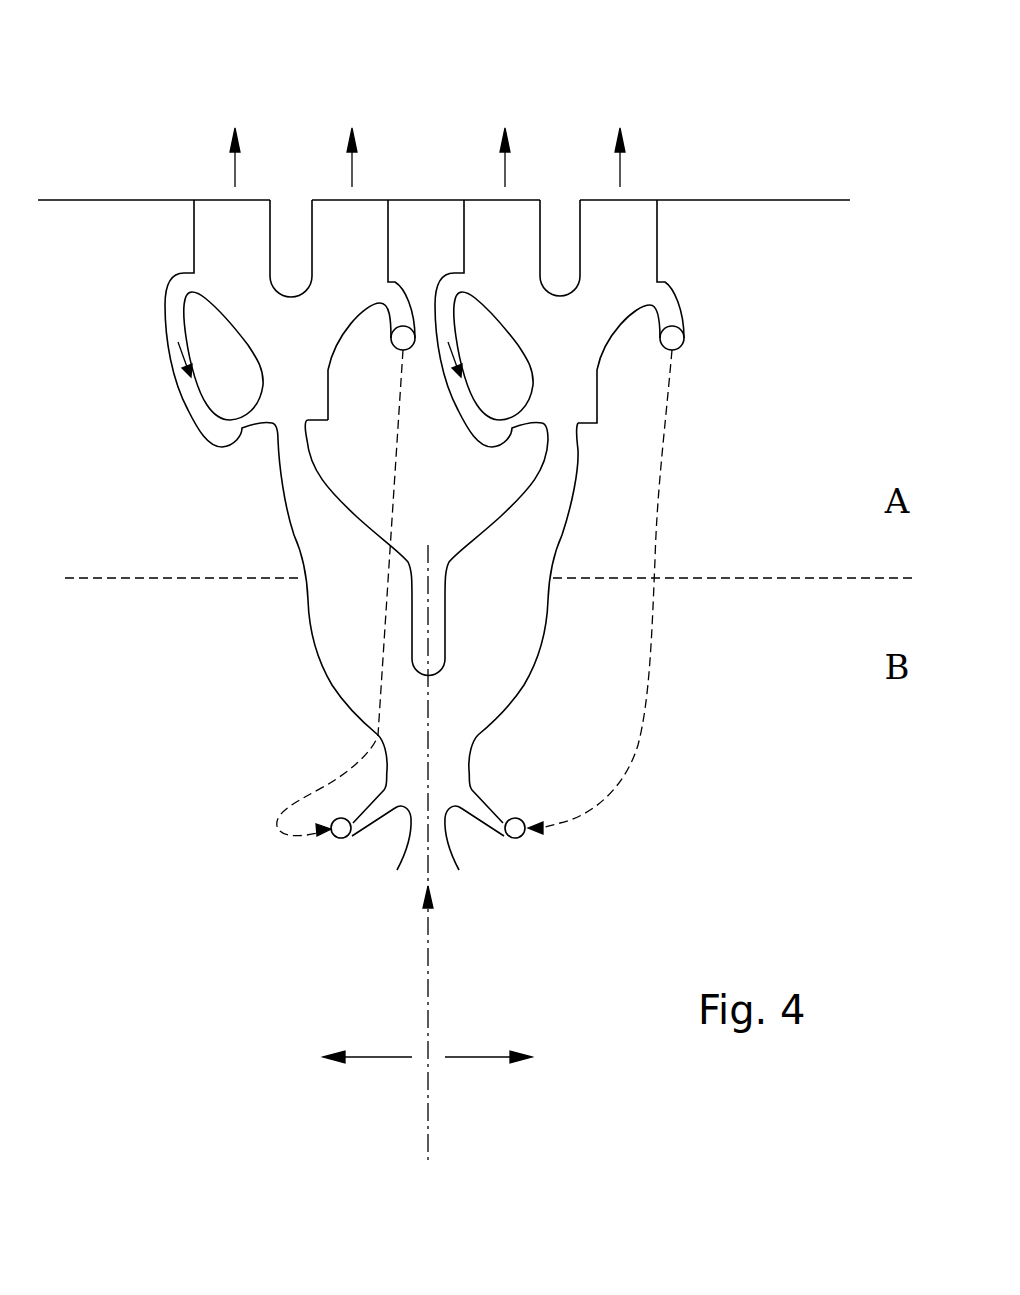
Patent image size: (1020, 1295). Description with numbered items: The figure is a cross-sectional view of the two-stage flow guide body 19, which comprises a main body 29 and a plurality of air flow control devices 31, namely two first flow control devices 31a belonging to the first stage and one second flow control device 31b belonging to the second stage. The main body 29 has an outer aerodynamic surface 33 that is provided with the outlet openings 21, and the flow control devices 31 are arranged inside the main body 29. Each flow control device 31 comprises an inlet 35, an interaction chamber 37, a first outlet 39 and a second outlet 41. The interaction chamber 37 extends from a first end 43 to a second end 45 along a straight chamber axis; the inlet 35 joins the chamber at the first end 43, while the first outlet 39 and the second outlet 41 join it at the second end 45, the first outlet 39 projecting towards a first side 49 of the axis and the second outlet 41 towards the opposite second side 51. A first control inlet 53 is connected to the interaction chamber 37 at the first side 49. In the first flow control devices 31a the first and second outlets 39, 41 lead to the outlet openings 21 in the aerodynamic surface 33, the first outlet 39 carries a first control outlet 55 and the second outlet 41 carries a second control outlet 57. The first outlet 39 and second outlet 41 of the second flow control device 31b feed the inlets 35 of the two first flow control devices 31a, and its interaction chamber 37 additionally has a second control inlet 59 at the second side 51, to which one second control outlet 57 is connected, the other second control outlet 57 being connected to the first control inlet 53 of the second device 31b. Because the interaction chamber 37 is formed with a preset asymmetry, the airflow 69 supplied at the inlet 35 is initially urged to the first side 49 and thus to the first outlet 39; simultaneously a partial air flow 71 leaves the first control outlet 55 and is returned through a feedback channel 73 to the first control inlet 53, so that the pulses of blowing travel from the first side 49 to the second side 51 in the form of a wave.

The flow guide body 19 is at (183, 82).
The outlet openings 21 is at (600, 200).
The main body 29 is at (777, 349).
The air flow control devices 31 is at (407, 511).
The first flow control devices 31a is at (578, 445).
The second flow control device 31b is at (350, 667).
The outer aerodynamic surface 33 is at (166, 199).
The inlet 35 is at (441, 860).
The interaction chamber 37 is at (282, 349).
The first outlet 39 is at (350, 580).
The second outlet 41 is at (505, 595).
The first end 43 is at (447, 836).
The second end 45 is at (440, 686).
The first side 49 is at (378, 1052).
The second side 51 is at (475, 1052).
The first control inlet 53 is at (372, 812).
The first control outlet 55 is at (177, 283).
The second control outlet 57 is at (678, 302).
The second control inlet 59 is at (530, 836).
The airflow 69 is at (424, 928).
The partial air flow 71 is at (433, 593).
The feedback channel 73 is at (370, 750).